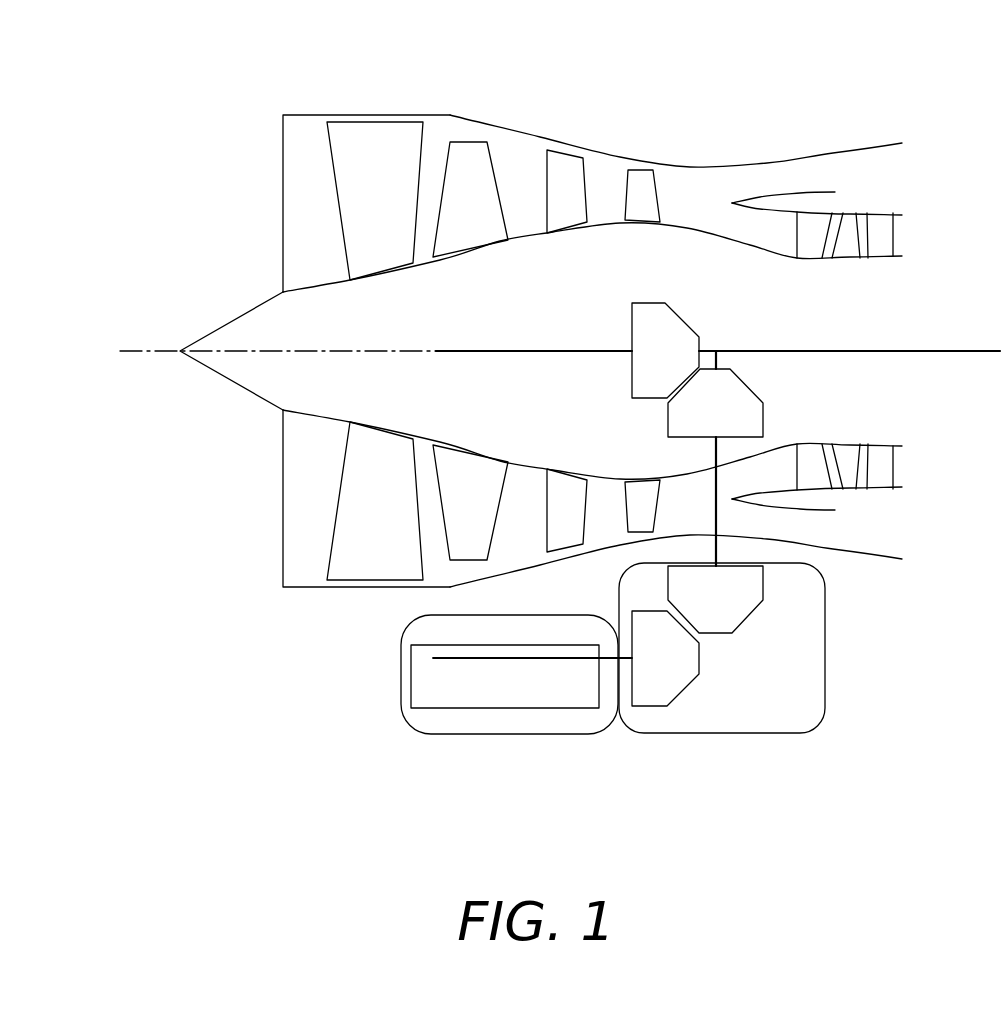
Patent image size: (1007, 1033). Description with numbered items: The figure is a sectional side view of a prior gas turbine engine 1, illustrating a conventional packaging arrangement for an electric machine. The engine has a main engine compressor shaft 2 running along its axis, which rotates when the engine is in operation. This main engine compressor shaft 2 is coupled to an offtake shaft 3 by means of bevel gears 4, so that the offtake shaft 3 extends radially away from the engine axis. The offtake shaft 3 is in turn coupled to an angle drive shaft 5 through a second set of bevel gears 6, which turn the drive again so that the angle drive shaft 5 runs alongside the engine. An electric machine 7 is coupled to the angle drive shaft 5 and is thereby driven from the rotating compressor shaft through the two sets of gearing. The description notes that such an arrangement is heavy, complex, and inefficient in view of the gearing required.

The gas turbine engine 1 is at (230, 165).
The main engine compressor shaft 2 is at (545, 350).
The offtake shaft 3 is at (717, 483).
The bevel gears 4 is at (667, 412).
The angle drive shaft 5 is at (473, 658).
The second set of bevel gears 6 is at (699, 658).
The electric machine 7 is at (412, 694).